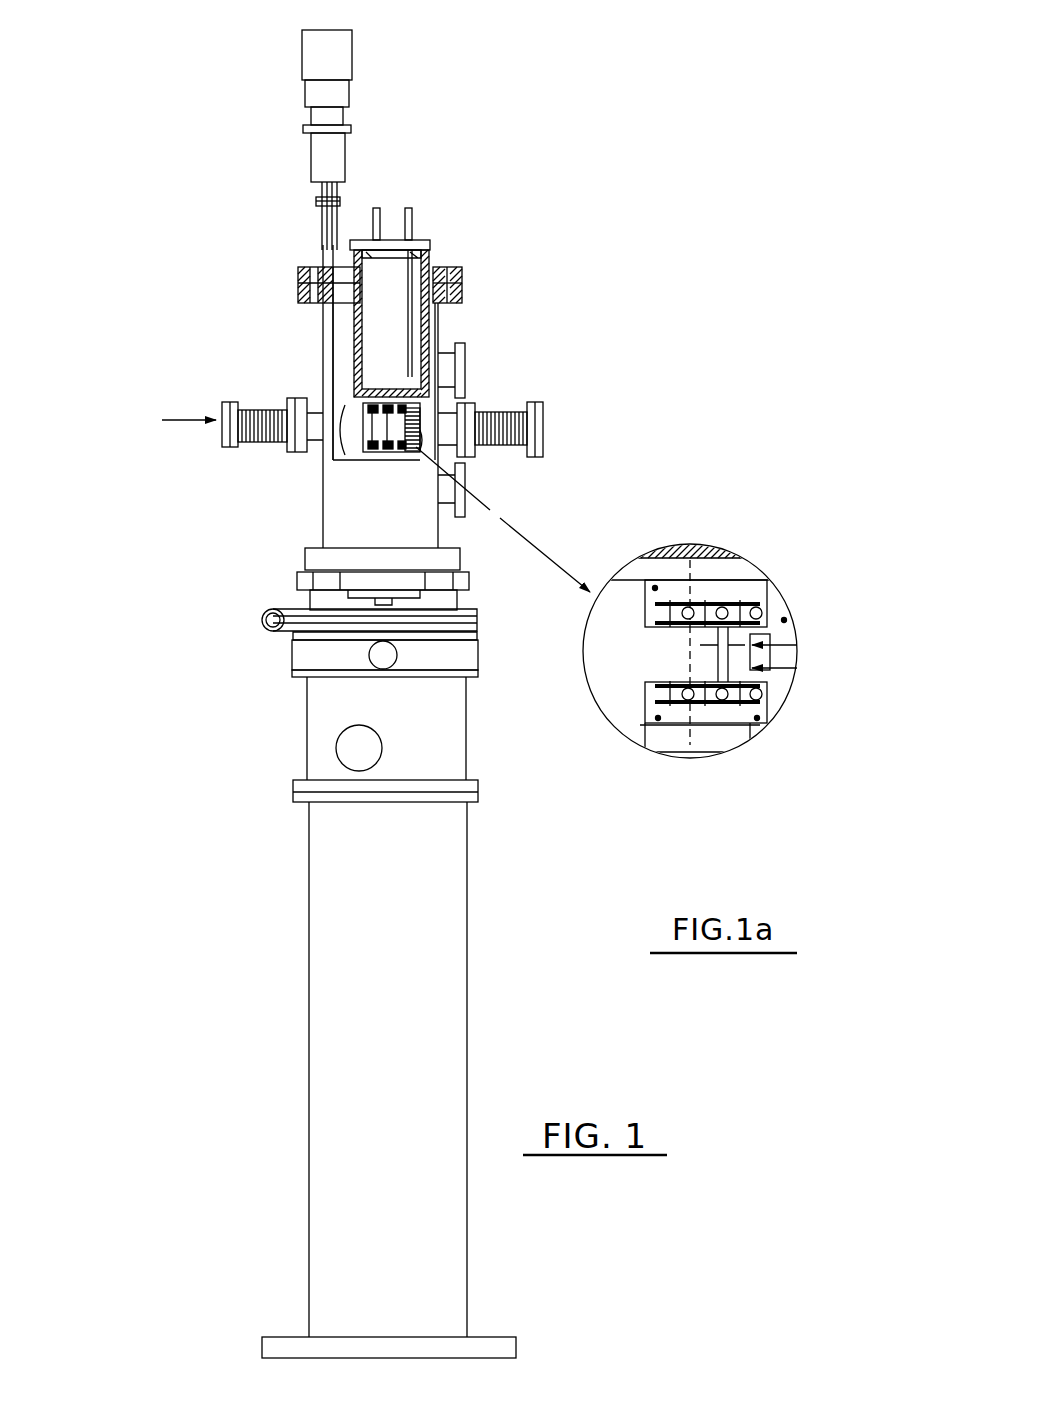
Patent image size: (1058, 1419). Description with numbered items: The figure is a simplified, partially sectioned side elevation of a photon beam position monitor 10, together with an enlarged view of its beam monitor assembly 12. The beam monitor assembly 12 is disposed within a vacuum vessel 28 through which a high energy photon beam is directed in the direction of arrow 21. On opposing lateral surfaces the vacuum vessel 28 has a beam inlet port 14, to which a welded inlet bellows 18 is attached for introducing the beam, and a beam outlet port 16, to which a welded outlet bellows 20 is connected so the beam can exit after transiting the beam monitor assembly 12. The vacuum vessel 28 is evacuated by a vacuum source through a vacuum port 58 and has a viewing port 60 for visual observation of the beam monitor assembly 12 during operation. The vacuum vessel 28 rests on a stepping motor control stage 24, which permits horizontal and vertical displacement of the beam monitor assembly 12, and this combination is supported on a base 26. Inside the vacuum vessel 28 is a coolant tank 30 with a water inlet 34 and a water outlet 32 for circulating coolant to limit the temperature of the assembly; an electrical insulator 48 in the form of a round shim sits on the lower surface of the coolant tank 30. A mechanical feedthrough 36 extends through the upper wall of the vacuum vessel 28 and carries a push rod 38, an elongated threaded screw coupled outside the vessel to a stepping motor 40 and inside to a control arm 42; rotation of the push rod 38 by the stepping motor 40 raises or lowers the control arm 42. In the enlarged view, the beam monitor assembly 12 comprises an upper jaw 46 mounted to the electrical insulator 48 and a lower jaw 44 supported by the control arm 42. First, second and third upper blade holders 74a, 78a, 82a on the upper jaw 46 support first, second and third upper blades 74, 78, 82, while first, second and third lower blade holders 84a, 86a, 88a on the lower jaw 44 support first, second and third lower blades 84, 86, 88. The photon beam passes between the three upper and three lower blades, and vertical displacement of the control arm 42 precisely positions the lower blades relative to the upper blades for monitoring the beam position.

In FIG. 1, the photon beam position monitor 10 is at (150, 614).
In FIG. 1, the beam monitor assembly 12 is at (400, 468).
In FIG. 1, the beam inlet port 14 is at (303, 398).
In FIG. 1, the beam outlet port 16 is at (475, 400).
In FIG. 1, the welded inlet bellows 18 is at (247, 402).
In FIG. 1, the welded outlet bellows 20 is at (515, 415).
In FIG. 1, the arrow 21 is at (185, 418).
In FIG. 1, the stepping motor control stage 24 is at (330, 700).
In FIG. 1, the base 26 is at (338, 875).
In FIG. 1, the vacuum vessel 28 is at (346, 382).
In FIG. 1, the coolant tank 30 is at (429, 335).
In FIG. 1a, the coolant tank 30 is at (716, 548).
In FIG. 1, the water outlet 32 is at (376, 222).
In FIG. 1, the water inlet 34 is at (412, 222).
In FIG. 1, the mechanical feedthrough 36 is at (348, 202).
In FIG. 1, the push rod 38 is at (330, 242).
In FIG. 1, the stepping motor 40 is at (340, 60).
In FIG. 1, the control arm 42 is at (383, 465).
In FIG. 1a, the control arm 42 is at (690, 724).
In FIG. 1a, the lower jaw 44 is at (722, 705).
In FIG. 1a, the upper jaw 46 is at (735, 560).
In FIG. 1a, the electrical insulator 48 is at (668, 578).
In FIG. 1, the vacuum port 58 is at (465, 372).
In FIG. 1, the viewing port 60 is at (465, 478).
In FIG. 1a, the first upper blade 74 is at (712, 646).
In FIG. 1a, the first upper blade holder 74a is at (648, 553).
In FIG. 1a, the second upper blade 78 is at (712, 660).
In FIG. 1a, the second upper blade holder 78a is at (703, 560).
In FIG. 1a, the third upper blade 82 is at (757, 623).
In FIG. 1a, the third upper blade holder 82a is at (760, 562).
In FIG. 1a, the first lower blade 84 is at (672, 686).
In FIG. 1a, the first lower blade holder 84a is at (668, 725).
In FIG. 1a, the second lower blade 86 is at (727, 657).
In FIG. 1a, the second lower blade holder 86a is at (705, 724).
In FIG. 1a, the third lower blade 88 is at (760, 672).
In FIG. 1a, the third lower blade holder 88a is at (750, 722).